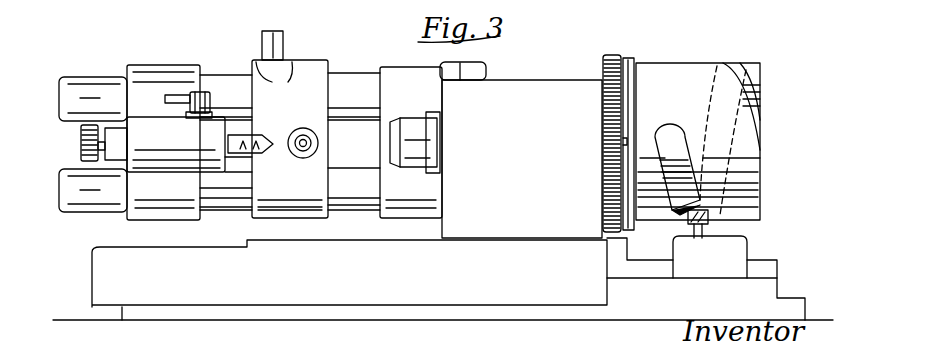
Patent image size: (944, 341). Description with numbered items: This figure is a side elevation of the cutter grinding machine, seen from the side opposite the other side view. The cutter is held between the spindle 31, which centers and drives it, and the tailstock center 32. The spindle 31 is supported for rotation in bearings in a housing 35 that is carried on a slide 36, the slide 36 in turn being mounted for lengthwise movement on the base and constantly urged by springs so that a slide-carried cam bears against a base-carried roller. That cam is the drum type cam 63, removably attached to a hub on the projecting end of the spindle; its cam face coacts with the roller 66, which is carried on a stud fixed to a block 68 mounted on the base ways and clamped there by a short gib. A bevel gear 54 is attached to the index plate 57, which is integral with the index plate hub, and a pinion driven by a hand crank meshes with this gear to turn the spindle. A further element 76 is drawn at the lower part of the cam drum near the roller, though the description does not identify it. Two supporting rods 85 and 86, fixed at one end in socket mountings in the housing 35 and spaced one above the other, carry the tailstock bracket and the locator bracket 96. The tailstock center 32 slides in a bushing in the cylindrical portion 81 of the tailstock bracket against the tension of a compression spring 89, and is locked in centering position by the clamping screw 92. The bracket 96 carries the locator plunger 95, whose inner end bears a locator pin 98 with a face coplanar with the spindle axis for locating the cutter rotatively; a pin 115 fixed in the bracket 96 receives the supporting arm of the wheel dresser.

The supporting rod 85 is at (73, 82).
The supporting rod 86 is at (80, 200).
The compression spring 89 is at (81, 140).
The cylindrical portion 81 is at (176, 144).
The clamping screw 92 is at (190, 99).
The tailstock center 32 is at (243, 150).
The bracket 96 is at (305, 80).
The pin 115 is at (262, 38).
The plunger 95 is at (294, 153).
The locator pin 98 is at (305, 152).
The spindle 31 is at (414, 128).
The housing 35 is at (518, 85).
The bevel gear 54 is at (605, 62).
The index plate 57 is at (628, 60).
The drum type cam 63 is at (686, 72).
The finger 76 is at (669, 223).
The roller 66 is at (704, 232).
The block 68 is at (752, 252).
The slide 36 is at (352, 278).